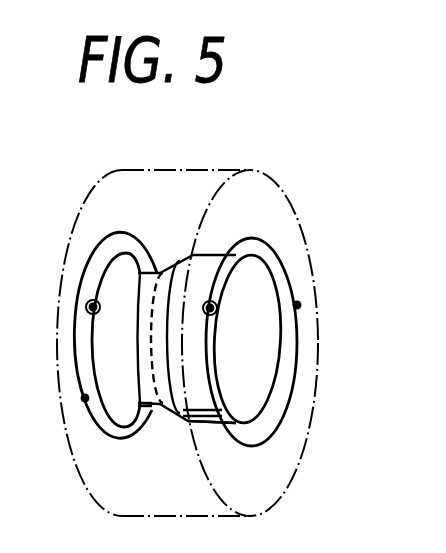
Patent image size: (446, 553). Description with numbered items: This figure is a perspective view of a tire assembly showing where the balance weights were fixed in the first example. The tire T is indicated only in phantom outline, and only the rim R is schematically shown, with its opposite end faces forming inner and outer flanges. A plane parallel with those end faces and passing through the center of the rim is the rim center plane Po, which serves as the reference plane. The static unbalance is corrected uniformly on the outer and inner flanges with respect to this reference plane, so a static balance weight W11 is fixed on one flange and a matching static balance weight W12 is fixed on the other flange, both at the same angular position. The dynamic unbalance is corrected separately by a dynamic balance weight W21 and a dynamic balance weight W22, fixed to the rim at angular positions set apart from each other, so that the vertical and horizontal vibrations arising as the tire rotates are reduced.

The tire T is at (208, 170).
The static balance weight W11 is at (71, 296).
The static balance weight W12 is at (232, 300).
The dynamic balance weight W21 is at (66, 411).
The dynamic balance weight W22 is at (320, 301).
The rim center plane Po is at (158, 408).
The rim R is at (217, 428).